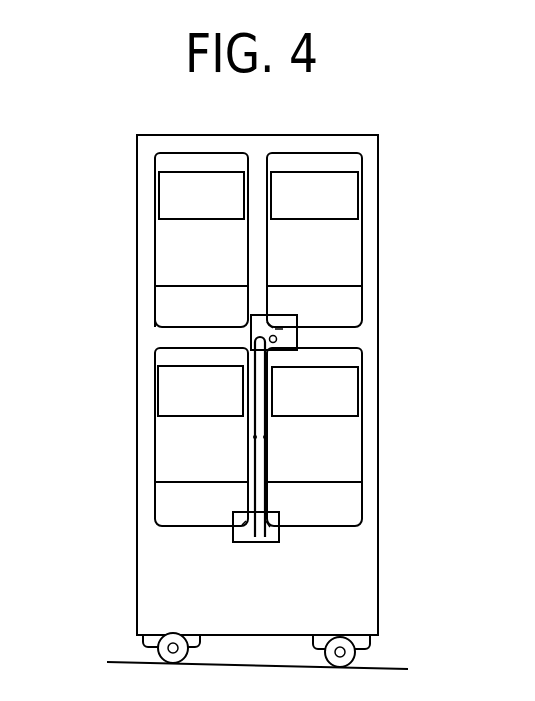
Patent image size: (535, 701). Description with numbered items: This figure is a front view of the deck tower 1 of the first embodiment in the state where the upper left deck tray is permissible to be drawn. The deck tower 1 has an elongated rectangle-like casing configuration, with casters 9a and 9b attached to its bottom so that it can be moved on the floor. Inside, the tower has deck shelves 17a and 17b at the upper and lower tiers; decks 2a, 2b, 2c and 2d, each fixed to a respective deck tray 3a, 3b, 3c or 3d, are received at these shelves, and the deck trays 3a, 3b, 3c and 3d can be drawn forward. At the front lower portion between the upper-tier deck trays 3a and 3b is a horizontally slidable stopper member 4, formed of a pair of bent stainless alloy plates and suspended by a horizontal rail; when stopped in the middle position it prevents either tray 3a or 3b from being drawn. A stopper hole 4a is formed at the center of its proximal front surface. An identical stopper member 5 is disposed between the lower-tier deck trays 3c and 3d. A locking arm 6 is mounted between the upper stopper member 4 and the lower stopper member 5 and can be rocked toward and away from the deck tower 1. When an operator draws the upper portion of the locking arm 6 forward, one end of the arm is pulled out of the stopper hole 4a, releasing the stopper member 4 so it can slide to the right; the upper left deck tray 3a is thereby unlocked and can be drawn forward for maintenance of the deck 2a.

The deck tower 1 is at (390, 179).
The upper left deck 2a is at (170, 246).
The upper right deck 2b is at (338, 246).
The lower left deck 2c is at (170, 443).
The lower right deck 2d is at (348, 463).
The upper left deck tray 3a is at (170, 302).
The upper right deck tray 3b is at (345, 305).
The lower left deck tray 3c is at (170, 507).
The lower right deck tray 3d is at (348, 508).
The stopper member 4 is at (297, 322).
The stopper hole 4a is at (297, 340).
The stopper member 5 is at (280, 533).
The locking arm 6 is at (266, 437).
The caster 9a is at (156, 654).
The caster 9b is at (357, 656).
The upper deck shelf 17a is at (313, 150).
The lower deck shelf 17b is at (185, 530).